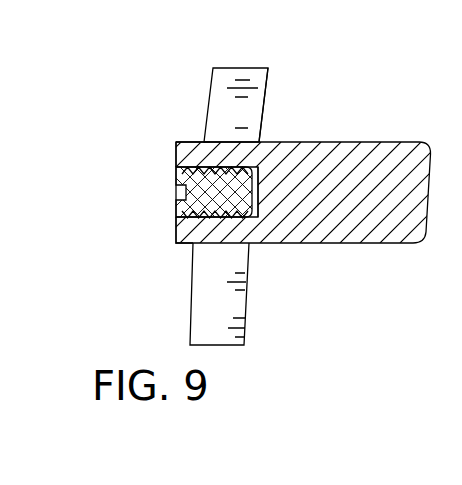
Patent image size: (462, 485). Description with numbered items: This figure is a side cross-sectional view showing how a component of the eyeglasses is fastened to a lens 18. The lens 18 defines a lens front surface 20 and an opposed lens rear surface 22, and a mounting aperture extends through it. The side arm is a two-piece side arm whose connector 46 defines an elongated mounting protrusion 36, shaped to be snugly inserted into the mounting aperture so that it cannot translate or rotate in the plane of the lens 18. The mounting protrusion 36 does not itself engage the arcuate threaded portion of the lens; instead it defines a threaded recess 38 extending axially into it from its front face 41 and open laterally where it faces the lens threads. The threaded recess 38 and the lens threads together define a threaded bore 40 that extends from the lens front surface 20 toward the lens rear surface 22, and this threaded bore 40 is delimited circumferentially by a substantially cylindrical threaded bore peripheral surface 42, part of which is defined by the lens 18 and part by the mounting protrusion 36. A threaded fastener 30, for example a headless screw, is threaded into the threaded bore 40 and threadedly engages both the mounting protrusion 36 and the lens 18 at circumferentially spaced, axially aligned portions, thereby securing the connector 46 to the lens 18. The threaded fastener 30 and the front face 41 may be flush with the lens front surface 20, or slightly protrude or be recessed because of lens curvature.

The lens 18 is at (235, 317).
The lens front surface 20 is at (210, 103).
The lens rear surface 22 is at (262, 100).
The threaded fastener 30 is at (200, 198).
The mounting protrusion 36 is at (193, 228).
The threaded recess 38 is at (180, 165).
The threaded bore 40 is at (245, 167).
The front face 41 is at (177, 148).
The threaded bore peripheral surface 42 is at (245, 167).
The connector 46 is at (303, 240).